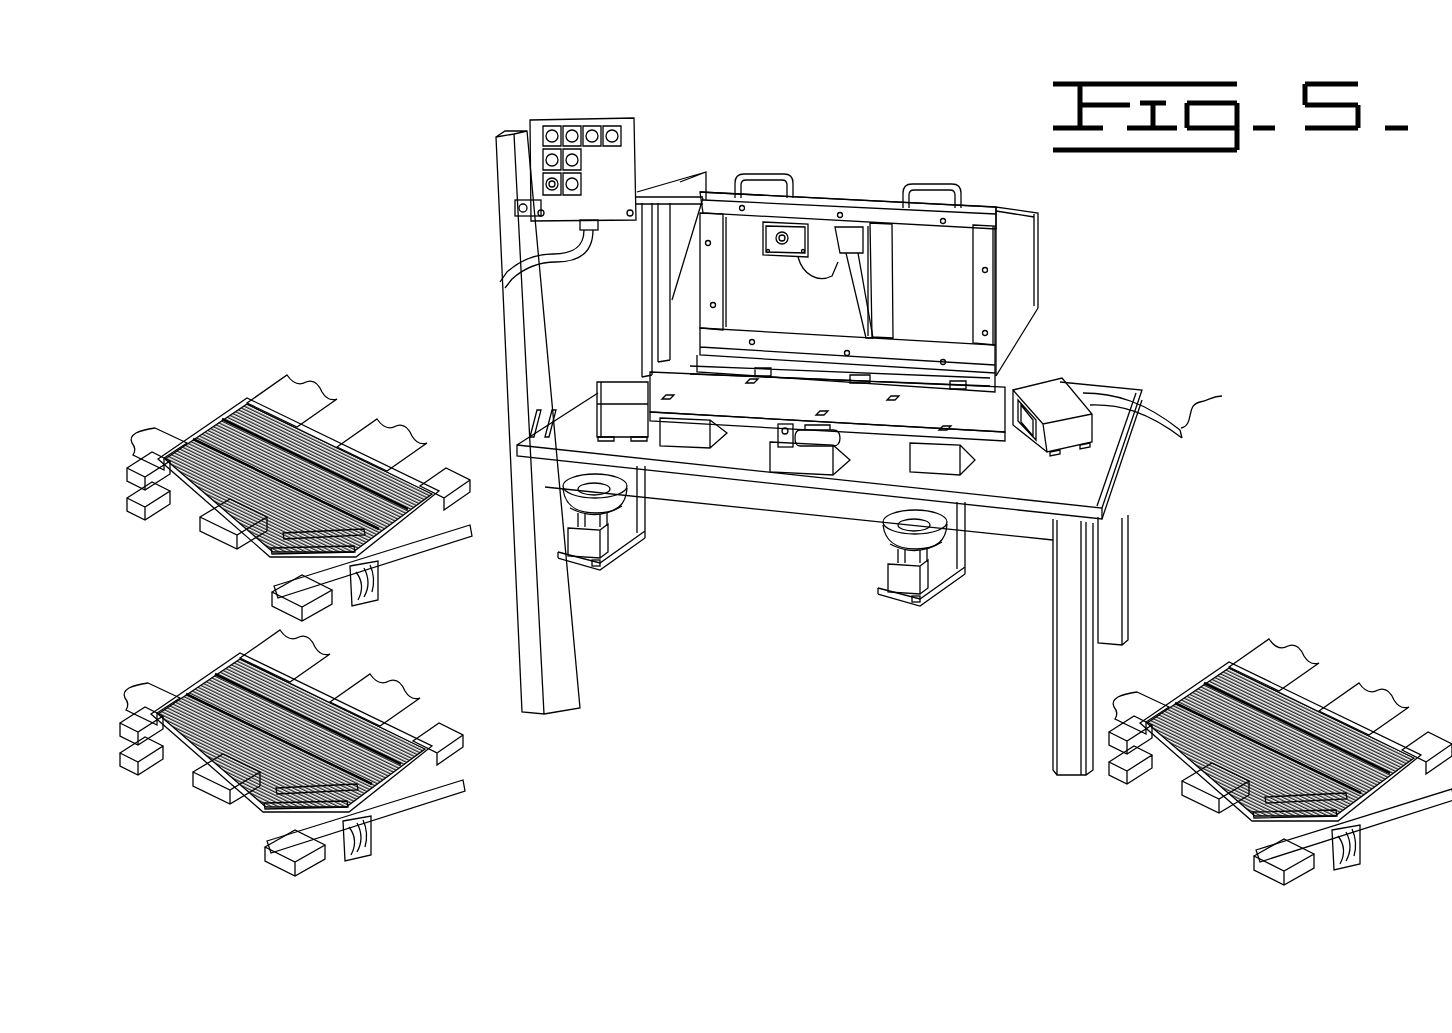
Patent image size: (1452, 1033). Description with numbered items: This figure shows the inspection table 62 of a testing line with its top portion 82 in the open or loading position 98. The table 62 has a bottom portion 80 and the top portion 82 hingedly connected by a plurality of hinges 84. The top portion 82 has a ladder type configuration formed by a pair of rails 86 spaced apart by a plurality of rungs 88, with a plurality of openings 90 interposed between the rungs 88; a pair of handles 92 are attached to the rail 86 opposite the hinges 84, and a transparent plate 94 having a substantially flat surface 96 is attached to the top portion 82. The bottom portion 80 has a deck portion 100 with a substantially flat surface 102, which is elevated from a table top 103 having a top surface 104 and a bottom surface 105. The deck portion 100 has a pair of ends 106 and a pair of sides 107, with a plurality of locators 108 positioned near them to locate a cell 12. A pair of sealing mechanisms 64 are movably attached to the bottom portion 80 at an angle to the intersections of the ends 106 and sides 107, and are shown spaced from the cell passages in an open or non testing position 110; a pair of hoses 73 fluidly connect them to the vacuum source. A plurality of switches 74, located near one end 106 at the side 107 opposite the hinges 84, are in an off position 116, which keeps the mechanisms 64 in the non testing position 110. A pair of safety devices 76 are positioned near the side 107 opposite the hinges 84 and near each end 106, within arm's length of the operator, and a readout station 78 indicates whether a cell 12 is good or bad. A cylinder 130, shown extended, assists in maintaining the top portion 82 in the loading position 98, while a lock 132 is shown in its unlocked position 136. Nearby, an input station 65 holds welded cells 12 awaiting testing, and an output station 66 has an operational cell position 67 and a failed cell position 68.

The cell 12 is at (210, 417).
The table 62 is at (1095, 496).
The sealing mechanism 64 is at (631, 405).
The input station 65 is at (1142, 820).
The output station 66 is at (404, 634).
The operational cell position 67 is at (413, 843).
The failed cell position 68 is at (386, 398).
The hose 73 is at (1165, 411).
The switch 74 is at (578, 123).
The safety device 76 is at (612, 537).
The readout station 78 is at (680, 355).
The bottom portion 80 is at (921, 419).
The top portion 82 is at (997, 285).
The hinge 84 is at (852, 383).
The rail 86 is at (858, 193).
The rung 88 is at (703, 196).
The opening 90 is at (766, 306).
The handle 92 is at (786, 173).
The transparent plate 94 is at (1012, 212).
The flat surface 96 is at (1012, 305).
The open or loading position 98 is at (1170, 300).
The deck portion 100 is at (985, 445).
The flat surface 102 is at (722, 399).
The table top 103 is at (856, 491).
The top surface 104 is at (1112, 450).
The bottom surface 105 is at (1112, 490).
The end 106 is at (680, 360).
The side 107 is at (1007, 395).
The locator 108 is at (752, 383).
The open or non testing position 110 is at (576, 397).
The off position 116 is at (655, 95).
The cylinder 130 is at (847, 292).
The lock 132 is at (790, 447).
The unlocked position 136 is at (724, 606).